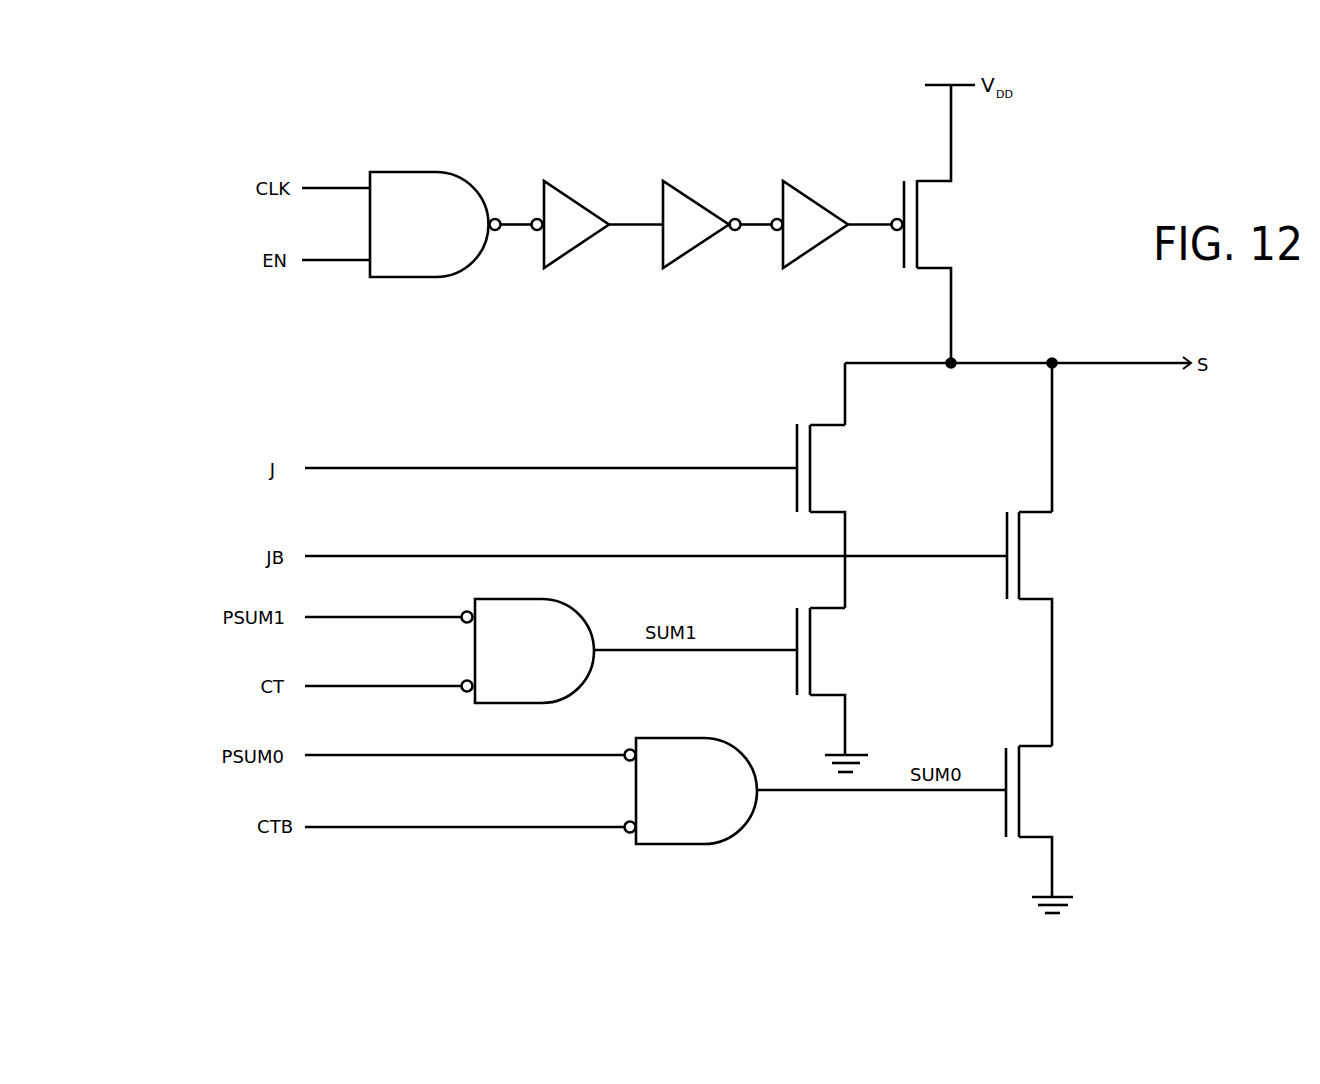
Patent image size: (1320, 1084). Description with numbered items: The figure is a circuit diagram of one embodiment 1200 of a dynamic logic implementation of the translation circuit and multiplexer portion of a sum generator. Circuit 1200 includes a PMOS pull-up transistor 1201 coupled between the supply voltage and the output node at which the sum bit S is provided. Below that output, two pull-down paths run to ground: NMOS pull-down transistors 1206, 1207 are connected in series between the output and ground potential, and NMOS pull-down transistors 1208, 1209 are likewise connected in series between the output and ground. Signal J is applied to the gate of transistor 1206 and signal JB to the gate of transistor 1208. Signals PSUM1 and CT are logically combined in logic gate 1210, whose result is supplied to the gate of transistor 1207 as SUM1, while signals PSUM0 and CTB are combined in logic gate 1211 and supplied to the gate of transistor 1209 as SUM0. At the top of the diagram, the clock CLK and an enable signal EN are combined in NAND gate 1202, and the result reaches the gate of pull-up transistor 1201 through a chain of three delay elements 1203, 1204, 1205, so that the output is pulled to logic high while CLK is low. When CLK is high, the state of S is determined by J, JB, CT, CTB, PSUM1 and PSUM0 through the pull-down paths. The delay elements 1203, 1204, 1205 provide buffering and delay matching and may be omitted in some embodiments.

The circuit 1200 is at (348, 138).
The PMOS pull-up transistor 1201 is at (940, 222).
The NAND gate 1202 is at (420, 178).
The delay element 1203 is at (563, 197).
The delay element 1204 is at (683, 197).
The delay element 1205 is at (800, 196).
The NMOS pull-down transistor 1206 is at (836, 471).
The NMOS pull-down transistor 1207 is at (836, 653).
The NMOS pull-down transistor 1208 is at (1045, 556).
The NMOS pull-down transistor 1209 is at (1045, 793).
The logic gate 1210 is at (575, 624).
The logic gate 1211 is at (680, 740).